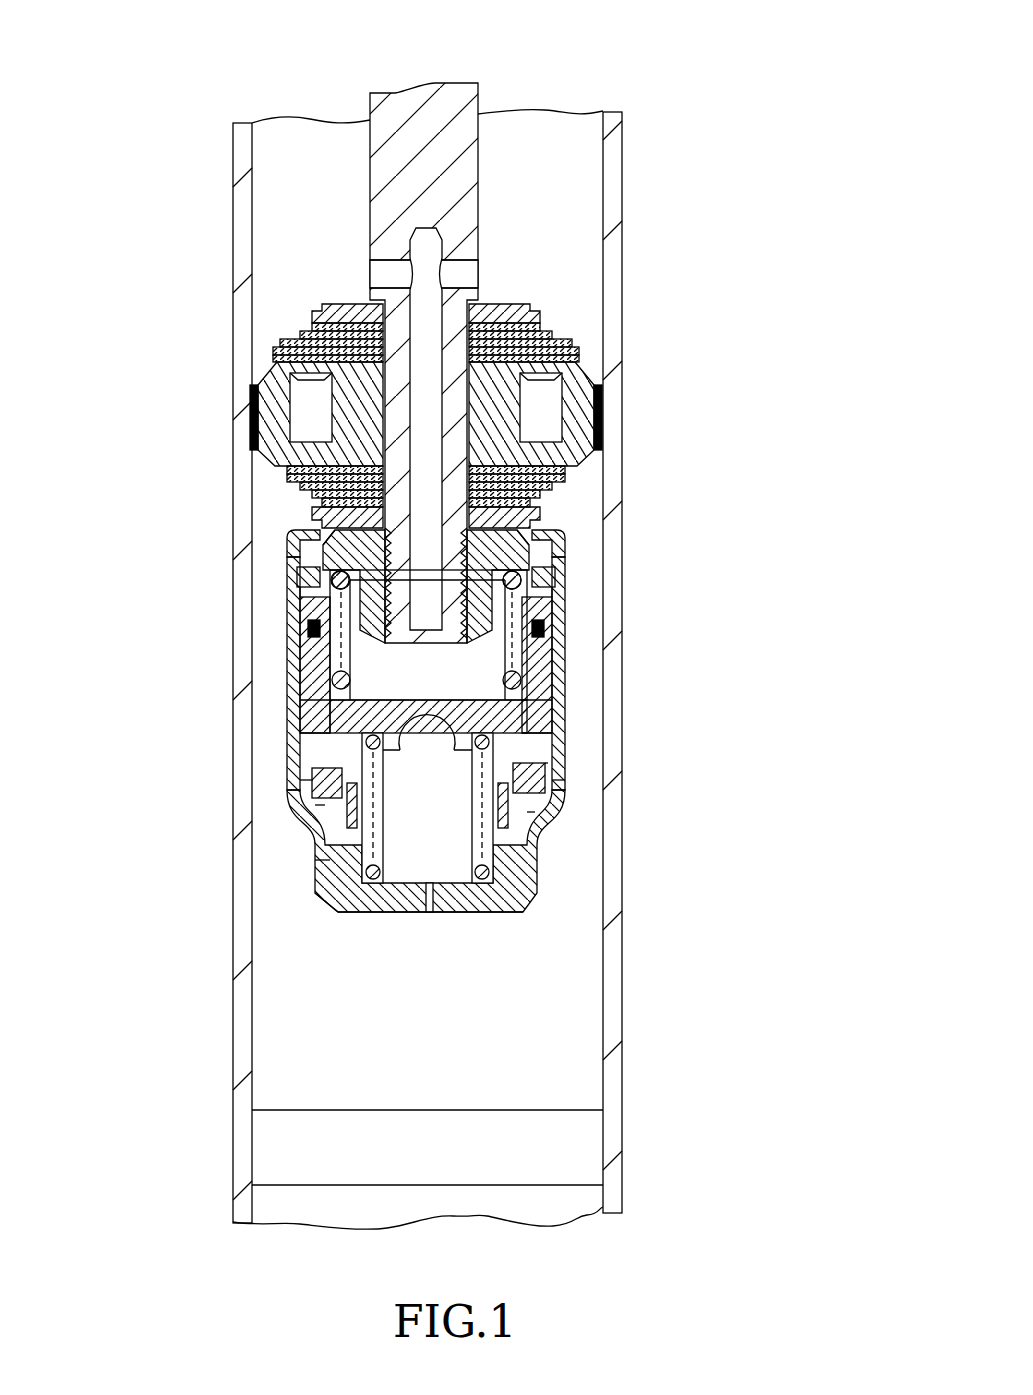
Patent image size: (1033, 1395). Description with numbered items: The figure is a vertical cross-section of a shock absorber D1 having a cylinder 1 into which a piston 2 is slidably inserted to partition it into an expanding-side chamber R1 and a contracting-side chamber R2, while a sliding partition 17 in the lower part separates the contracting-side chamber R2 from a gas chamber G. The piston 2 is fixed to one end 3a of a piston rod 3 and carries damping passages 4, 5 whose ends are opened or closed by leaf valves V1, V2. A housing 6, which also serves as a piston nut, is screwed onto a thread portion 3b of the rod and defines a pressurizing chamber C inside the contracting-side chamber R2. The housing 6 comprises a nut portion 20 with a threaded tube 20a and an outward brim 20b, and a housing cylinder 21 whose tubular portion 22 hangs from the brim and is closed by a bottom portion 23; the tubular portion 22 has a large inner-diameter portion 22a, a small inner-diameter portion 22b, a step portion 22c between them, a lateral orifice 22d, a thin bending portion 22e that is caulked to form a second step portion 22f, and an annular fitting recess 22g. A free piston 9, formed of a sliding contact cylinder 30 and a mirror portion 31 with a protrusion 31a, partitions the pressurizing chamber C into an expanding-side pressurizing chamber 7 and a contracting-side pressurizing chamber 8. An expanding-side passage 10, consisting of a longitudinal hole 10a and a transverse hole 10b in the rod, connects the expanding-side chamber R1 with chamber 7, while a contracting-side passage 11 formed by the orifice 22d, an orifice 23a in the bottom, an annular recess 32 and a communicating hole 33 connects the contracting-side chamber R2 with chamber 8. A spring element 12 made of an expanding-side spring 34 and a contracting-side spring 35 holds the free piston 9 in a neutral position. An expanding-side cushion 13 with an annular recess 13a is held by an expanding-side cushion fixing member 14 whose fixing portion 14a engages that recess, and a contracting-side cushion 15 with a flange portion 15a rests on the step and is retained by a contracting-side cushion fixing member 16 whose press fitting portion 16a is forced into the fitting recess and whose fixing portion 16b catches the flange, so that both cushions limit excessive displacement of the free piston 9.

The shock absorber D1 is at (219, 117).
The cylinder 1 is at (623, 148).
The piston rod 3 is at (482, 101).
The expanding-side chamber R1 is at (553, 215).
The contracting-side chamber R2 is at (560, 1037).
The longitudinal hole 10a is at (472, 277).
The transverse hole 10b is at (505, 390).
The expanding-side passage 10 is at (447, 437).
The leaf valve V2 is at (277, 344).
The leaf valve V1 is at (577, 468).
The piston 2 is at (605, 385).
The one end of piston rod 3a is at (372, 428).
The thread portion 3b is at (293, 504).
The damping passage 5 is at (315, 393).
The damping passage 4 is at (548, 398).
The nut portion 20 is at (567, 538).
The threaded tube 20a is at (544, 612).
The brim 20b is at (290, 525).
The tubular portion 22 is at (285, 783).
The large inner-diameter portion 22a is at (290, 603).
The small inner-diameter portion 22b is at (325, 895).
The step portion 22c is at (517, 812).
The orifice 22d is at (307, 693).
The bending portion 22e is at (287, 552).
The second step portion 22f is at (290, 613).
The fitting recess 22g is at (340, 868).
The fixing portion 14a is at (290, 578).
The annular recess 13a is at (562, 590).
The expanding-side cushion fixing member 14 is at (300, 575).
The expanding-side cushion 13 is at (550, 580).
The expanding-side pressurizing chamber 7 is at (540, 647).
The contracting-side pressurizing chamber 8 is at (525, 740).
The sliding contact cylinder 30 is at (303, 660).
The annular recess 32 is at (295, 705).
The communicating hole 33 is at (282, 752).
The contracting-side spring 35 is at (372, 707).
The expanding-side spring 34 is at (503, 690).
The housing 6 is at (580, 767).
The free piston 9 is at (296, 790).
The housing cylinder 21 is at (318, 810).
The contracting-side cushion 15 is at (311, 789).
The contracting-side cushion fixing member 16 is at (546, 795).
The flange portion 15a is at (350, 818).
The press fitting portion 16a is at (497, 852).
The fixing portion 16b is at (549, 785).
The spring element 12 is at (535, 882).
The mirror portion 31 is at (395, 758).
The protrusion 31a is at (443, 750).
The bottom portion 23 is at (493, 912).
The orifice 23a is at (428, 907).
The contracting-side passage 11 is at (430, 918).
The sliding partition 17 is at (570, 1148).
The gas chamber G is at (580, 1208).
The pressurizing chamber C is at (753, 637).